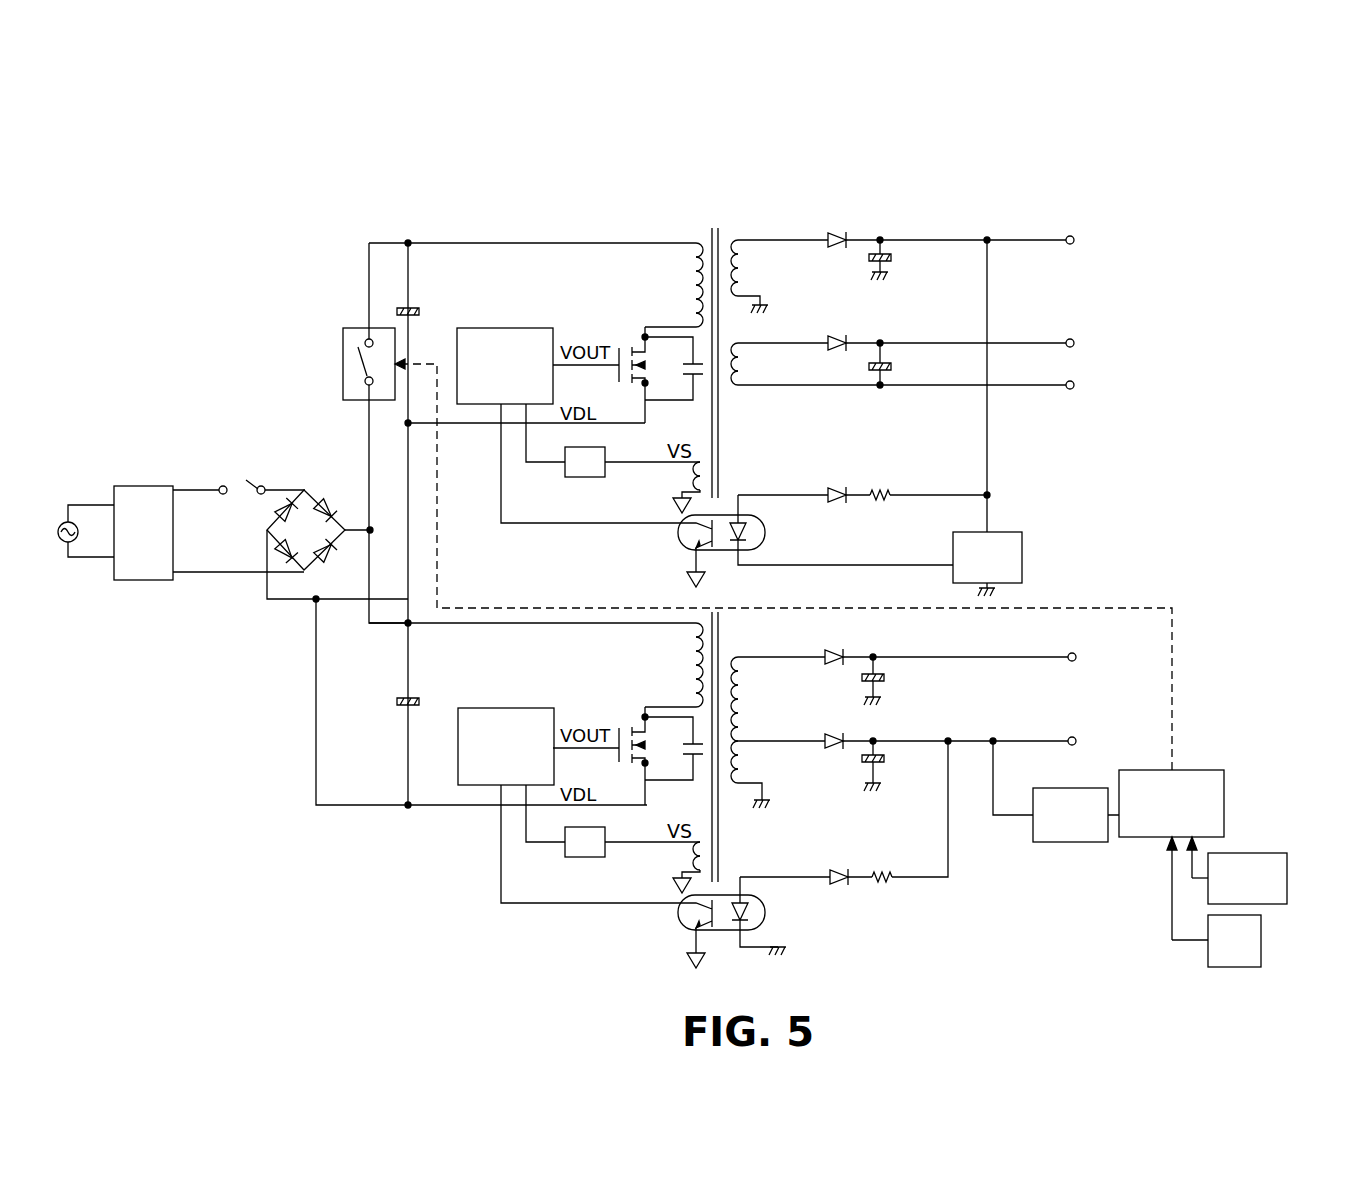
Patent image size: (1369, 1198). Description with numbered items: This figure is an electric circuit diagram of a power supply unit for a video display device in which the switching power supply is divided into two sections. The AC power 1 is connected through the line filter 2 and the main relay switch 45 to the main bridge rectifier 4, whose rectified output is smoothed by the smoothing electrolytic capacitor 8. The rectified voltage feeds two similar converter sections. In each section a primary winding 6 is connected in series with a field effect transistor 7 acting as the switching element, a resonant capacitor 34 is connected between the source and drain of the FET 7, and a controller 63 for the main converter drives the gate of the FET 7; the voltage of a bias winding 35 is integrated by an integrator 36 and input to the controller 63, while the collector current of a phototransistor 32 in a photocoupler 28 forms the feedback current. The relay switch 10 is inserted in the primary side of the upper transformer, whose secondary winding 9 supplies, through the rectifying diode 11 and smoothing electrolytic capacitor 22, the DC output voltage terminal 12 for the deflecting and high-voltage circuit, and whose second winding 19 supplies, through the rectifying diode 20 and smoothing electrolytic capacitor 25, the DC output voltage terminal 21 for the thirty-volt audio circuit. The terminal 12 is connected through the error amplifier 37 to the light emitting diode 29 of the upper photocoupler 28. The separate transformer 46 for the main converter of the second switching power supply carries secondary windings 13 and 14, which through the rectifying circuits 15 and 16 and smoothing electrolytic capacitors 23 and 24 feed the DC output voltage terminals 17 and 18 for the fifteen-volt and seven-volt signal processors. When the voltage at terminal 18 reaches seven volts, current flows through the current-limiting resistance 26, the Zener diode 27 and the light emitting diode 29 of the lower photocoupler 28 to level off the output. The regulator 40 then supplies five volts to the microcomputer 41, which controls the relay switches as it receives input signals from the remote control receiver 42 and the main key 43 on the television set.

The AC power 1 is at (82, 506).
The line filter 2 is at (130, 580).
The main relay switch 45 is at (246, 482).
The main bridge rectifier 4 is at (324, 496).
The relay switch 10 is at (342, 354).
The smoothing electrolytic capacitor 8 is at (420, 307).
The controller for the main converter 63 is at (528, 328).
The field effect transistor (FET) 7 is at (619, 343).
The resonant capacitor 34 is at (692, 362).
The primary winding 6 is at (690, 270).
The transformer for the main converter 46 is at (720, 852).
The integrator 36 is at (570, 478).
The bias winding 35 is at (688, 470).
The photocoupler 28 is at (680, 534).
The light emitting diode 29 is at (754, 536).
The phototransistor 32 is at (719, 548).
The Zener diode 27 is at (828, 492).
The current-limiting resistance 26 is at (890, 495).
The error amplifier 37 is at (1023, 546).
The secondary winding 9 is at (740, 276).
The rectifying diode 11 is at (846, 230).
The DC output voltage terminal 12 is at (1032, 236).
The smoothing electrolytic capacitor 22 is at (893, 260).
The second winding 19 is at (742, 358).
The rectifying diode 20 is at (832, 354).
The smoothing electrolytic capacitor 25 is at (895, 366).
The DC output voltage terminal 21 is at (1018, 344).
The secondary winding 13 is at (744, 708).
The secondary winding 14 is at (746, 751).
The rectifying circuit 15 is at (827, 664).
The smoothing electrolytic capacitor 23 is at (881, 676).
The DC output voltage terminal 17 is at (1018, 658).
The rectifying circuit 16 is at (828, 750).
The smoothing electrolytic capacitor 24 is at (886, 767).
The DC output voltage terminal 18 is at (1042, 744).
The regulator 40 is at (1062, 842).
The microcomputer 41 is at (1208, 770).
The remote control receiver 42 is at (1246, 853).
The main key 43 is at (1262, 931).